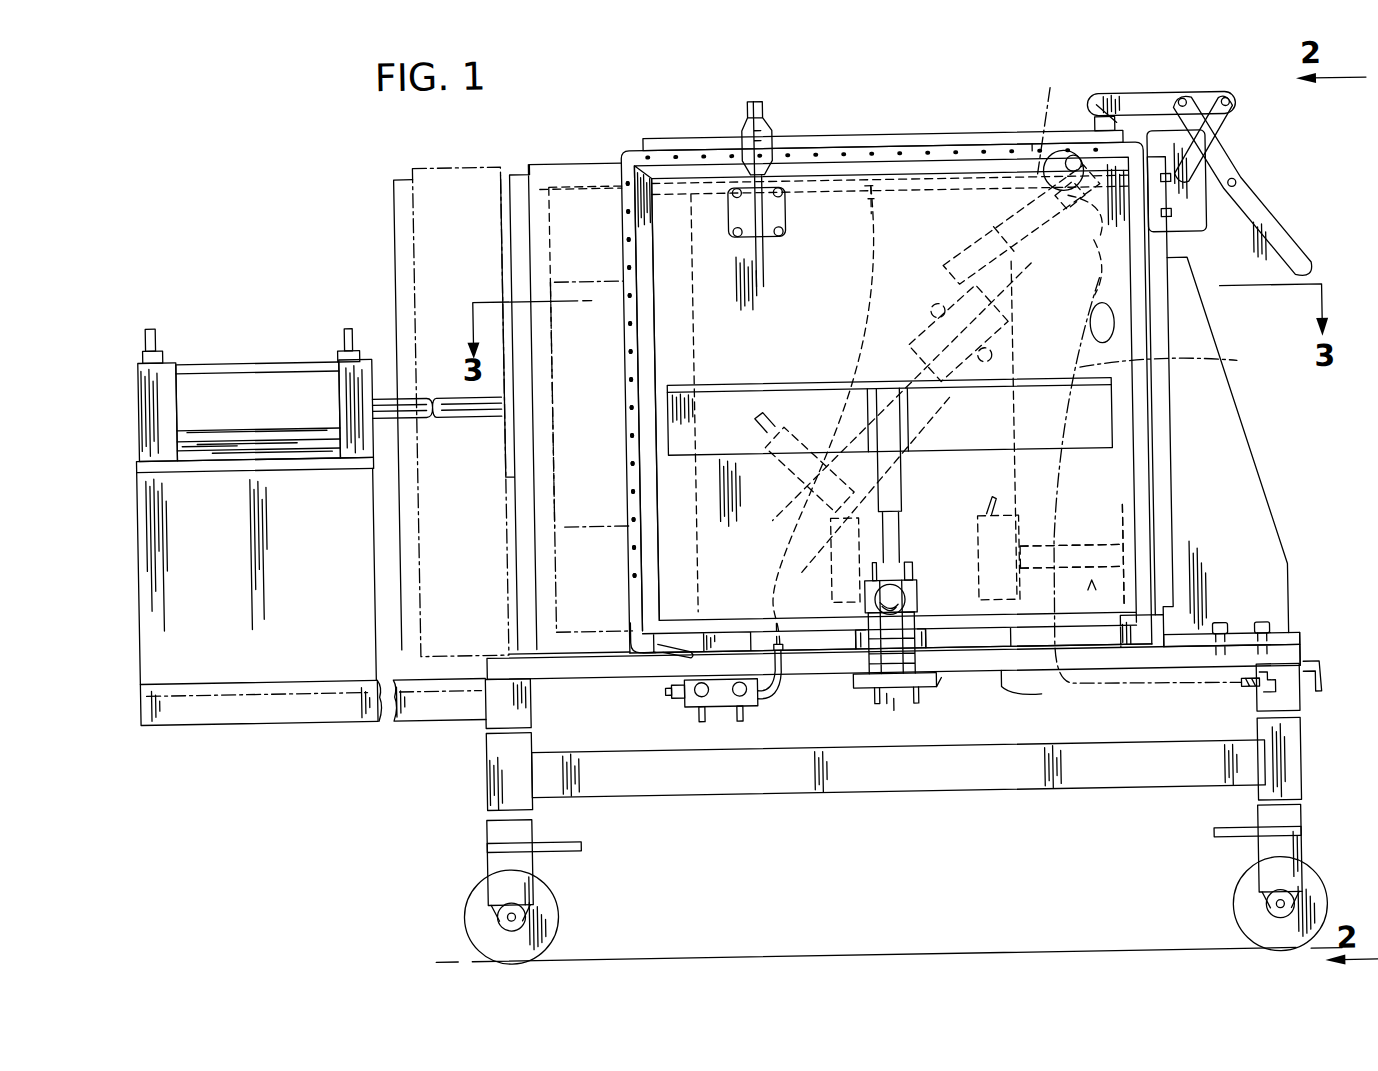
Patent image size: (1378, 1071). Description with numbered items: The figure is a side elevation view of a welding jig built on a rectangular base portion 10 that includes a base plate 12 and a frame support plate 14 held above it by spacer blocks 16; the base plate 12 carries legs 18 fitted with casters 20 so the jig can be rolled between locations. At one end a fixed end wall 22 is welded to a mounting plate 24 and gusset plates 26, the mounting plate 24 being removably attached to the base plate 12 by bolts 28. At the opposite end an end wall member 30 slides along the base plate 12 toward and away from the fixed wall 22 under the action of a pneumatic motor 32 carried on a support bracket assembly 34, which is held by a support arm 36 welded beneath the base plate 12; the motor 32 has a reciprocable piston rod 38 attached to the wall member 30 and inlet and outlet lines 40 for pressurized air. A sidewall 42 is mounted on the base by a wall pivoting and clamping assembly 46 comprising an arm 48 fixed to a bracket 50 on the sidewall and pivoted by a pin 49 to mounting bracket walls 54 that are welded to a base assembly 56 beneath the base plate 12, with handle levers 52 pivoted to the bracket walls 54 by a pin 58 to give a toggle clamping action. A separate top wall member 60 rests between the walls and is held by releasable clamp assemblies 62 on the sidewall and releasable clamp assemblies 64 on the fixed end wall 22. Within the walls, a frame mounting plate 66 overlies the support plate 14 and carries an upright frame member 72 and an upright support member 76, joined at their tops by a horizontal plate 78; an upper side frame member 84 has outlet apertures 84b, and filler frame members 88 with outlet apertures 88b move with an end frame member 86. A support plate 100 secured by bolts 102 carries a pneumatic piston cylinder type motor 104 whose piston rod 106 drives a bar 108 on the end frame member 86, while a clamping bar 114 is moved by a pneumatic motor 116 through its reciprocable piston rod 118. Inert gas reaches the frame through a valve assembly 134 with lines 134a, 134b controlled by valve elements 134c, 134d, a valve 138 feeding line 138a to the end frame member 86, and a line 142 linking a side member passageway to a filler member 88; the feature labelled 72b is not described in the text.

The rectangular base portion 10 is at (1306, 640).
The base plate 12 is at (548, 676).
The frame support plate 14 is at (992, 682).
The spacer blocks 16 is at (728, 640).
The legs 18 is at (484, 782).
The wheels or casters 20 is at (475, 886).
The fixed end wall 22 is at (1178, 438).
The mounting plate 24 is at (1285, 638).
The gusset plates 26 is at (1262, 470).
The bolts 28 is at (1261, 630).
The end wall member 30 is at (493, 165).
The pneumatic motor 32 is at (230, 354).
The support bracket assembly 34 is at (130, 592).
The support arm 36 is at (290, 710).
The reciprocable piston rod 38 is at (488, 412).
The inlet and outlet lines 40 is at (157, 318).
The sidewall 42 is at (672, 232).
The wall pivoting and clamping assembly 46 is at (920, 570).
The arm 48 is at (915, 507).
The pin 49 is at (892, 705).
The bracket 50 is at (778, 378).
The levers 52 is at (866, 605).
The mounting bracket walls 54 is at (866, 640).
The base assembly 56 is at (938, 693).
The pin 58 is at (852, 690).
The top wall member 60 is at (900, 140).
The releasable clamp assemblies 62 is at (740, 108).
The releasable clamp assemblies 64 is at (1178, 90).
The frame mounting plate 66 is at (632, 620).
The upright frame member 72 is at (640, 542).
The strip holes 72b is at (634, 434).
The upright support member 76 is at (922, 285).
The horizontal plate 78 is at (848, 196).
The upper side frame member 84 is at (948, 137).
The outlet apertures 84b is at (860, 150).
The end frame member 86 is at (1112, 248).
The filler frame members 88 is at (1003, 218).
The outlet apertures 88b is at (1150, 150).
The support plate 100 is at (1016, 310).
The bolts 102 is at (1000, 380).
The pneumatic piston cylinder type motor 104 is at (935, 415).
The piston rod 106 is at (1035, 258).
The bar 108 is at (1066, 208).
The clamping bar 114 is at (1128, 538).
The pneumatic motor 116 is at (830, 548).
The reciprocable piston rod 118 is at (1030, 540).
The valve assembly 134 is at (722, 706).
The line 134a is at (667, 688).
The line 134b is at (876, 240).
The valve element 134c is at (699, 720).
The valve element 134d is at (740, 720).
The valve 138 is at (1258, 695).
The line 138a is at (1070, 715).
The line 142 is at (1051, 120).